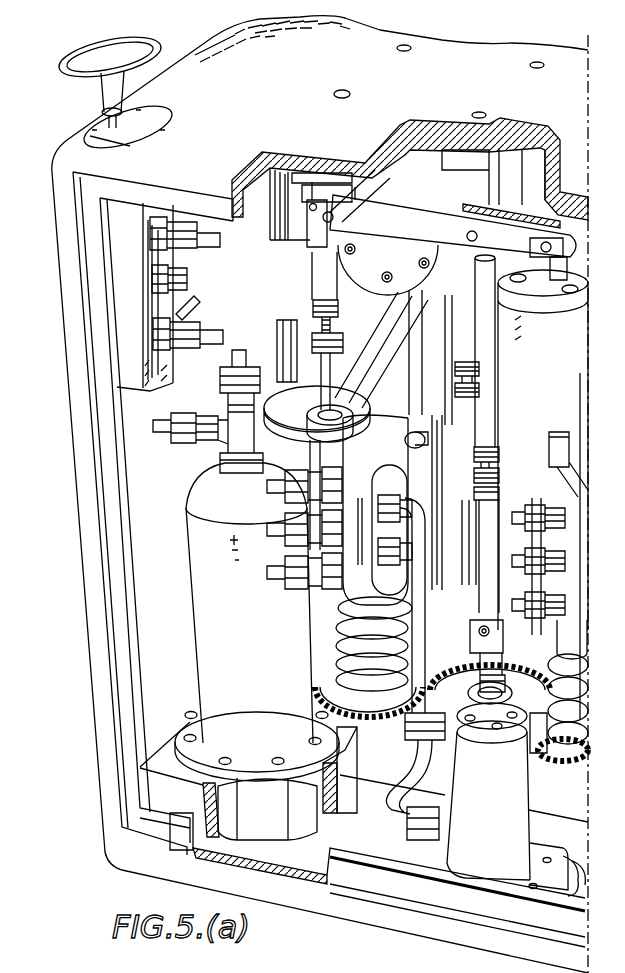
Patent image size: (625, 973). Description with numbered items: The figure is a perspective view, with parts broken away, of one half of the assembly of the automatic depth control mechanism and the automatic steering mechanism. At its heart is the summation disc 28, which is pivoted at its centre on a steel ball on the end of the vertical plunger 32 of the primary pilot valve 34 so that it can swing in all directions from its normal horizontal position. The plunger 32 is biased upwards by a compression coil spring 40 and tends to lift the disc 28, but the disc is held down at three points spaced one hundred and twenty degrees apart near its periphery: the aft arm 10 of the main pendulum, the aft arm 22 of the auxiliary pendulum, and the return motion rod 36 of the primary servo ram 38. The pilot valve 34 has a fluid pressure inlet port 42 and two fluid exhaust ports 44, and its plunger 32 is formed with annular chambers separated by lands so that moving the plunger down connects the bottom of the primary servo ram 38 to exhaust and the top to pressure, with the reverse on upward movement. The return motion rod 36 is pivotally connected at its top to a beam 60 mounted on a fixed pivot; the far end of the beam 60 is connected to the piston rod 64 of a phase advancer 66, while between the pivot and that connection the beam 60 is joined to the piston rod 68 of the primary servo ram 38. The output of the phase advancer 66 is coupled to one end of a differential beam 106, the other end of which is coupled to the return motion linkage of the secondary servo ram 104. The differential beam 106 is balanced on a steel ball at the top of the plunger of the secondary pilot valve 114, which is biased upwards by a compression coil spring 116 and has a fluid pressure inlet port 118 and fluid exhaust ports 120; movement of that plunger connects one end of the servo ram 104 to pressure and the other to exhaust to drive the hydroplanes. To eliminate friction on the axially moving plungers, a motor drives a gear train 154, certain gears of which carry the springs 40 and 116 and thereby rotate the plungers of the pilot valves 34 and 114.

The aft arm 10 is at (457, 368).
The aft arm 22 is at (284, 320).
The summation disc 28 is at (284, 398).
The vertical plunger 32 is at (392, 505).
The primary pilot valve 34 is at (346, 586).
The return motion rod 36 is at (318, 284).
The primary servo ram 38 is at (496, 804).
The compression coil spring 40 is at (333, 657).
The fluid pressure inlet port 42 is at (281, 537).
The fluid exhaust ports 44 is at (281, 495).
The beam 60 is at (410, 232).
The piston rod 64 is at (527, 253).
The phase advancer 66 is at (564, 377).
The piston rod 68 is at (476, 303).
The secondary servo ram 104 is at (405, 267).
The differential beam 106 is at (578, 437).
The secondary pilot valve 114 is at (556, 502).
The compression coil spring 116 is at (563, 748).
The fluid pressure inlet port 118 is at (538, 601).
The fluid exhaust ports 120 is at (498, 545).
The gear train 154 is at (474, 665).